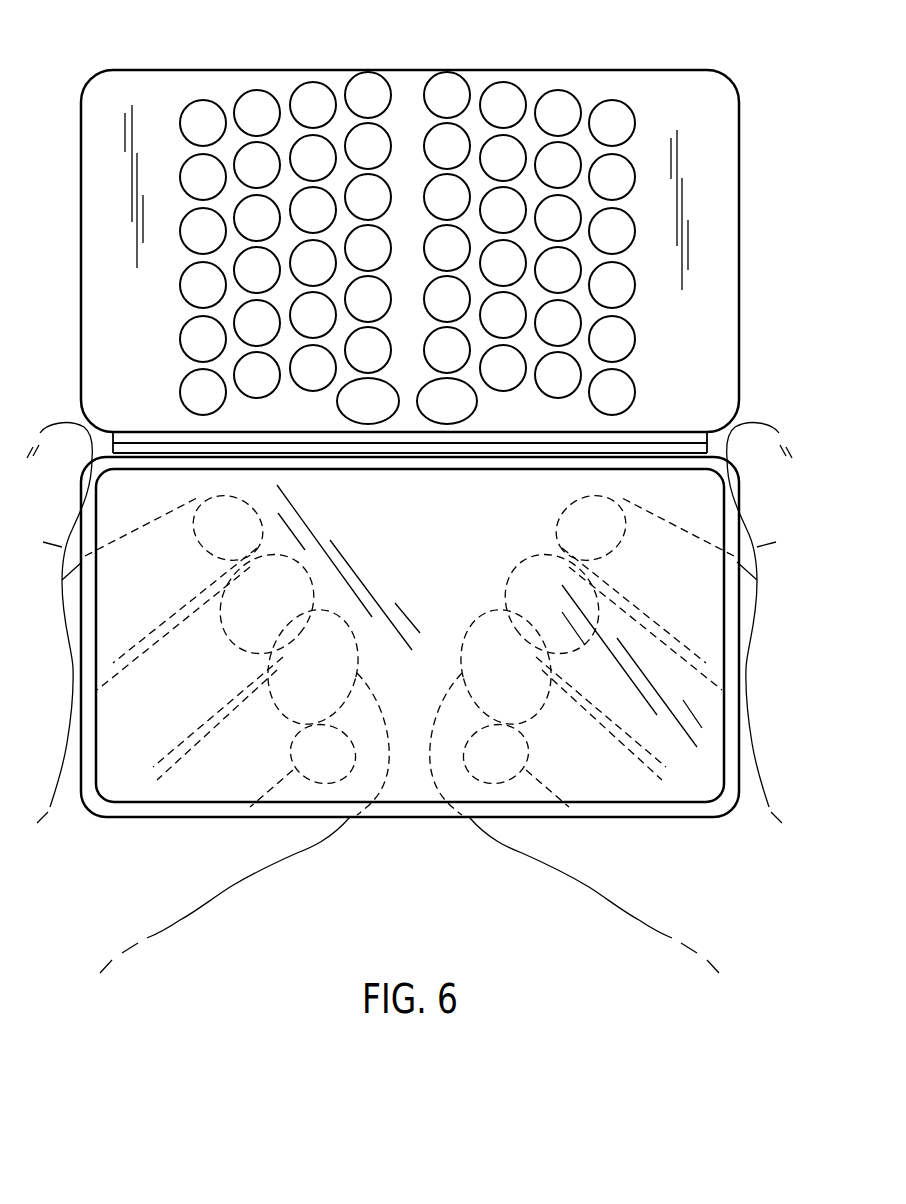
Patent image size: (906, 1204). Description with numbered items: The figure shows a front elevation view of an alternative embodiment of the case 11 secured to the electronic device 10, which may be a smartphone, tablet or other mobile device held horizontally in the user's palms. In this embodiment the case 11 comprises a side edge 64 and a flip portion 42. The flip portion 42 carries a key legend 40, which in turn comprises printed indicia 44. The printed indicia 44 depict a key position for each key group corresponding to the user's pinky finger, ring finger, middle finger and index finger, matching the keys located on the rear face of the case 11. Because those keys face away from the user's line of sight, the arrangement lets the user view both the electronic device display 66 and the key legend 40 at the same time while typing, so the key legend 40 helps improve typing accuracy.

The electronic device 10 is at (388, 464).
The case 11 is at (410, 673).
The key legend 40 is at (388, 228).
The flip portion 42 is at (654, 81).
The printed indicia 44 is at (248, 98).
The side edge 64 is at (658, 453).
The electronic device display 66 is at (437, 531).